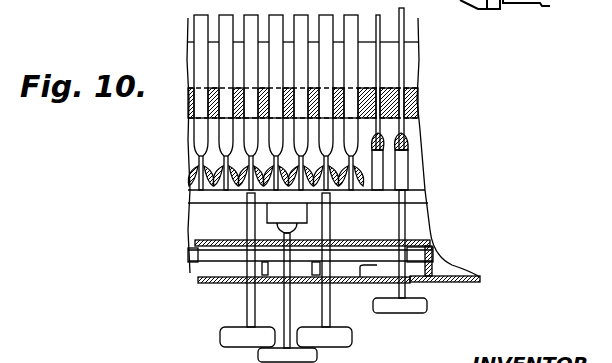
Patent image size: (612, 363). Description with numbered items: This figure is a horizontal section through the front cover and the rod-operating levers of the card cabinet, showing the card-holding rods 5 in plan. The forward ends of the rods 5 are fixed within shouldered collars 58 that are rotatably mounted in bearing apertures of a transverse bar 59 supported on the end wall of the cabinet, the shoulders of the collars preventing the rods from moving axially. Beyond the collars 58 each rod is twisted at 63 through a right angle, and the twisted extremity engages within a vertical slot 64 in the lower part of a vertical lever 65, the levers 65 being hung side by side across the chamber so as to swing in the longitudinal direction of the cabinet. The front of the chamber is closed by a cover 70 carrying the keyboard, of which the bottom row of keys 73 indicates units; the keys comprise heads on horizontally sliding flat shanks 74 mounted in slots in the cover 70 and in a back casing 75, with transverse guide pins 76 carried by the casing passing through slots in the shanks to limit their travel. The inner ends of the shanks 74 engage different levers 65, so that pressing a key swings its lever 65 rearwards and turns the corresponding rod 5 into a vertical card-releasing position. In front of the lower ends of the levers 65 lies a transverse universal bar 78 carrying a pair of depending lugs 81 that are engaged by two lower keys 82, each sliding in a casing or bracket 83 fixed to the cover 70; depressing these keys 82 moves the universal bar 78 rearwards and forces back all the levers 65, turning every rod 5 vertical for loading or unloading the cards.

The card-holding rod 5 is at (201, 47).
The shouldered collar 58 is at (188, 118).
The transverse bar 59 is at (420, 96).
The twisted part of rod 63 is at (196, 153).
The vertical slot 64 is at (192, 164).
The vertical lever 65 is at (242, 178).
The cover 70 is at (218, 283).
The bottom row of keys 73 is at (220, 338).
The key shank 74 is at (400, 230).
The back casing 75 is at (196, 239).
The transverse guide pin 76 is at (188, 255).
The universal bar 78 is at (440, 188).
The depending lug 81 is at (297, 213).
The key 82 is at (320, 352).
The casing or bracket 83 is at (455, 263).